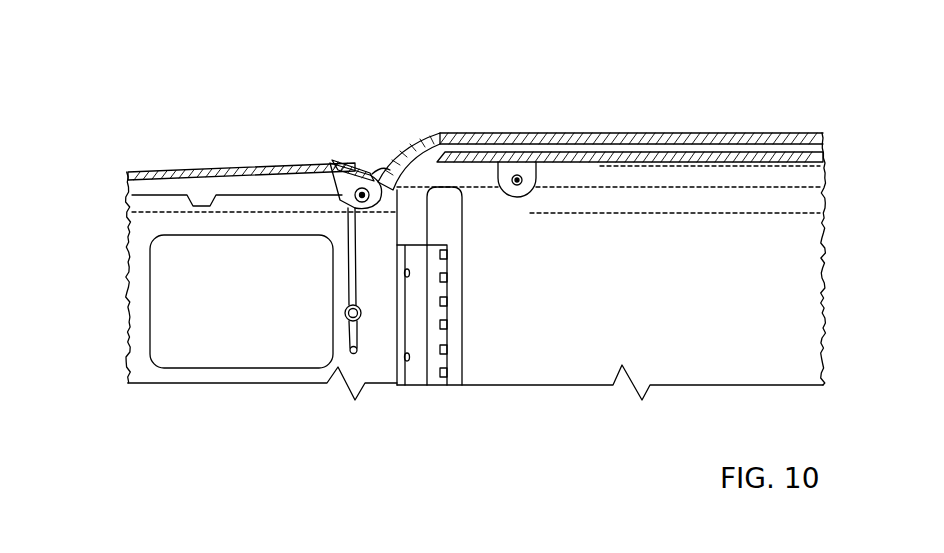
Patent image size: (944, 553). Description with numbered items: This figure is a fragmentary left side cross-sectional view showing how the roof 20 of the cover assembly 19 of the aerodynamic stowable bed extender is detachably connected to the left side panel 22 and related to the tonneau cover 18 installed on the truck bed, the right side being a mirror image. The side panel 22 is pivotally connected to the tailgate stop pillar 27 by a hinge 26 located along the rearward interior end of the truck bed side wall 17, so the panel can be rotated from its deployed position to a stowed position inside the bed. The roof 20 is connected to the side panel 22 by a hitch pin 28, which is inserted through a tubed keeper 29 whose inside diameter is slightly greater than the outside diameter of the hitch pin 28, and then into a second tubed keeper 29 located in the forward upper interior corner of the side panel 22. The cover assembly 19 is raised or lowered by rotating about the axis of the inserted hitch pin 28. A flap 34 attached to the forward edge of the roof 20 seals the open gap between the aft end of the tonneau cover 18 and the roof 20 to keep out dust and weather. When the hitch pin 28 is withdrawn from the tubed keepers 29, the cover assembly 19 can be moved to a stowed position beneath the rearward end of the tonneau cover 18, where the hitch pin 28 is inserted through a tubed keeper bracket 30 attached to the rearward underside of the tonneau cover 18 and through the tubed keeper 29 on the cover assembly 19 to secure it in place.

The truck bed side wall 17 is at (617, 233).
The tonneau cover 18 is at (653, 135).
The cover assembly 19 is at (722, 183).
The roof 20 is at (170, 168).
The left side panel 22 is at (252, 348).
The hinge 26 is at (428, 292).
The tailgate stop pillar 27 is at (448, 217).
The hitch pin 28 is at (357, 347).
The tubed keeper 29 is at (358, 191).
The tubed keeper bracket 30 is at (521, 190).
The flap 34 is at (383, 178).